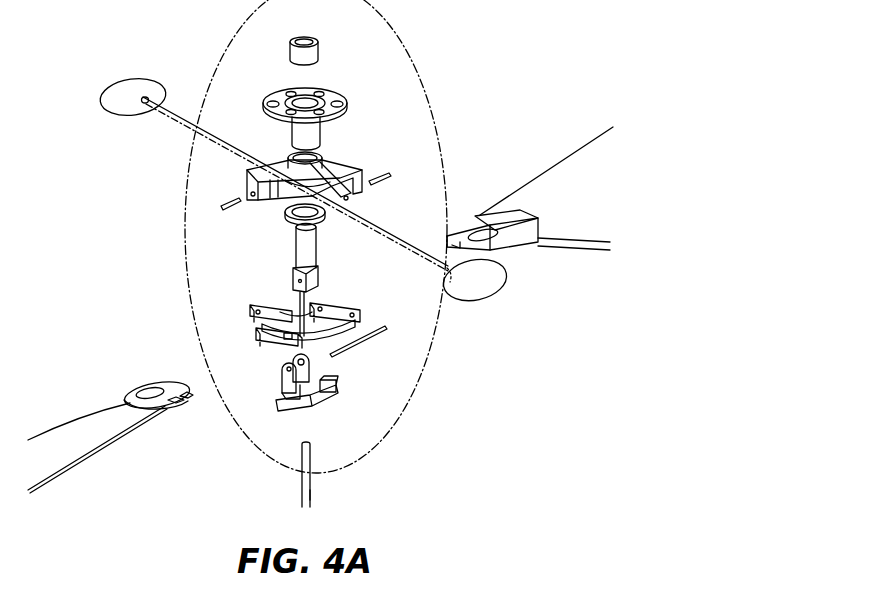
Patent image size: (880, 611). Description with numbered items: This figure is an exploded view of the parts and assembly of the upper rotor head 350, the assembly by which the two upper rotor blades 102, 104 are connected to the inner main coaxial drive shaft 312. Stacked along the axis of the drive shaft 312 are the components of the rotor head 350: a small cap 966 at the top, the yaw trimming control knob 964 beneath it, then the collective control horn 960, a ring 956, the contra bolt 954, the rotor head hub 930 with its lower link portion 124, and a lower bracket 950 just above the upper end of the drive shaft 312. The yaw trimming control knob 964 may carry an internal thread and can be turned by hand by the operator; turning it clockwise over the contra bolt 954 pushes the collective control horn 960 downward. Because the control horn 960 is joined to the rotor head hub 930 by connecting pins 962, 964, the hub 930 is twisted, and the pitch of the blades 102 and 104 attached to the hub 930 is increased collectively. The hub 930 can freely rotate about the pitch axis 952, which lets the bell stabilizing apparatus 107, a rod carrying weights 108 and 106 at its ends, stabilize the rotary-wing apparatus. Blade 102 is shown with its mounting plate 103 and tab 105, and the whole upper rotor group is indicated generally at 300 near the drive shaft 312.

The upper rotor blade 102 is at (78, 415).
The arm mounting plate 103 is at (128, 397).
The upper rotor blade 104 is at (553, 165).
The arm tab 105 is at (160, 397).
The arm end weight 106 is at (492, 290).
The bell stabilizing apparatus 107 is at (195, 137).
The flybar weight 108 is at (123, 78).
The lower link block 124 is at (280, 347).
The rotor head assembly 300 is at (312, 493).
The inner main coaxial drive shaft 312 is at (305, 487).
The rotor head 350 is at (433, 110).
The rotor head hub 930 is at (314, 321).
The lower bracket 950 is at (338, 383).
The pitch axis 952 is at (387, 327).
The contra bolt 954 is at (313, 263).
The bearing ring 956 is at (290, 223).
The collective control horn 960 is at (345, 163).
The connecting pin 962 is at (390, 175).
The yaw trimming control knob 964 is at (342, 97).
The cap 966 is at (315, 38).